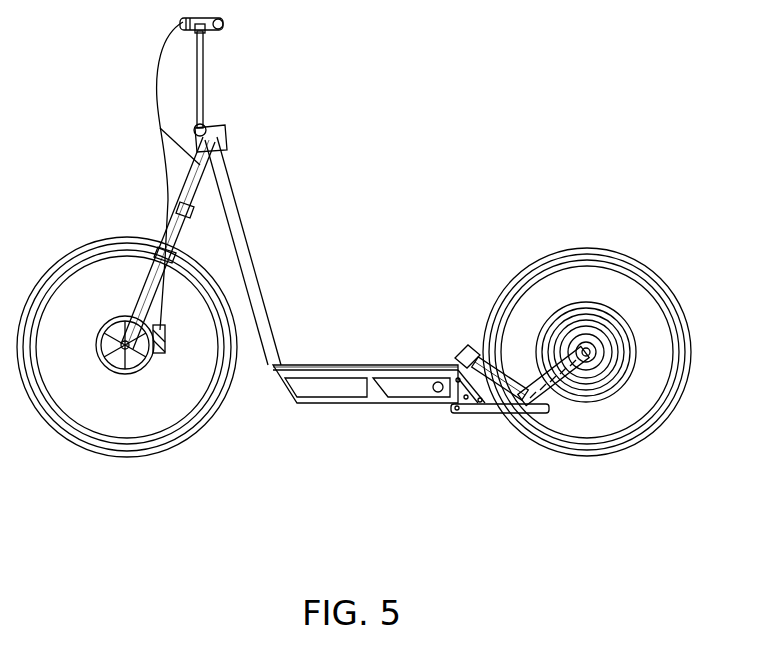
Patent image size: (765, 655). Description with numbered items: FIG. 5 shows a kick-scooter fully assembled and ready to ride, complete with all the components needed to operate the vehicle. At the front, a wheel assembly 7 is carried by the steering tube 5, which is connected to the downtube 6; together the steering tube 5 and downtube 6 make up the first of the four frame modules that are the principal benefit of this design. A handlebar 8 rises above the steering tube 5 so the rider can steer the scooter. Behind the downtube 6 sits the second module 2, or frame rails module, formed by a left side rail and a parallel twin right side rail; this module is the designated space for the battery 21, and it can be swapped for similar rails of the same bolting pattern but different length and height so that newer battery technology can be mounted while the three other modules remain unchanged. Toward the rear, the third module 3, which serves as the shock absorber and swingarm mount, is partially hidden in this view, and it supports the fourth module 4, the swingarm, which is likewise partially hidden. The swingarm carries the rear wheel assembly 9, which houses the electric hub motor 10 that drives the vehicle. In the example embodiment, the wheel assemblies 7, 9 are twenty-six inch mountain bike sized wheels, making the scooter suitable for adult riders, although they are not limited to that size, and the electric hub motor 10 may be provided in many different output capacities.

The second module 2 is at (283, 398).
The battery 21 is at (360, 365).
The third module 3 is at (457, 352).
The fourth module 4 is at (484, 414).
The steering tube 5 is at (218, 152).
The downtube 6 is at (249, 262).
The wheel assembly 7 is at (95, 237).
The handlebar 8 is at (205, 70).
The wheel assembly 9 is at (583, 248).
The electric hub motor 10 is at (636, 352).